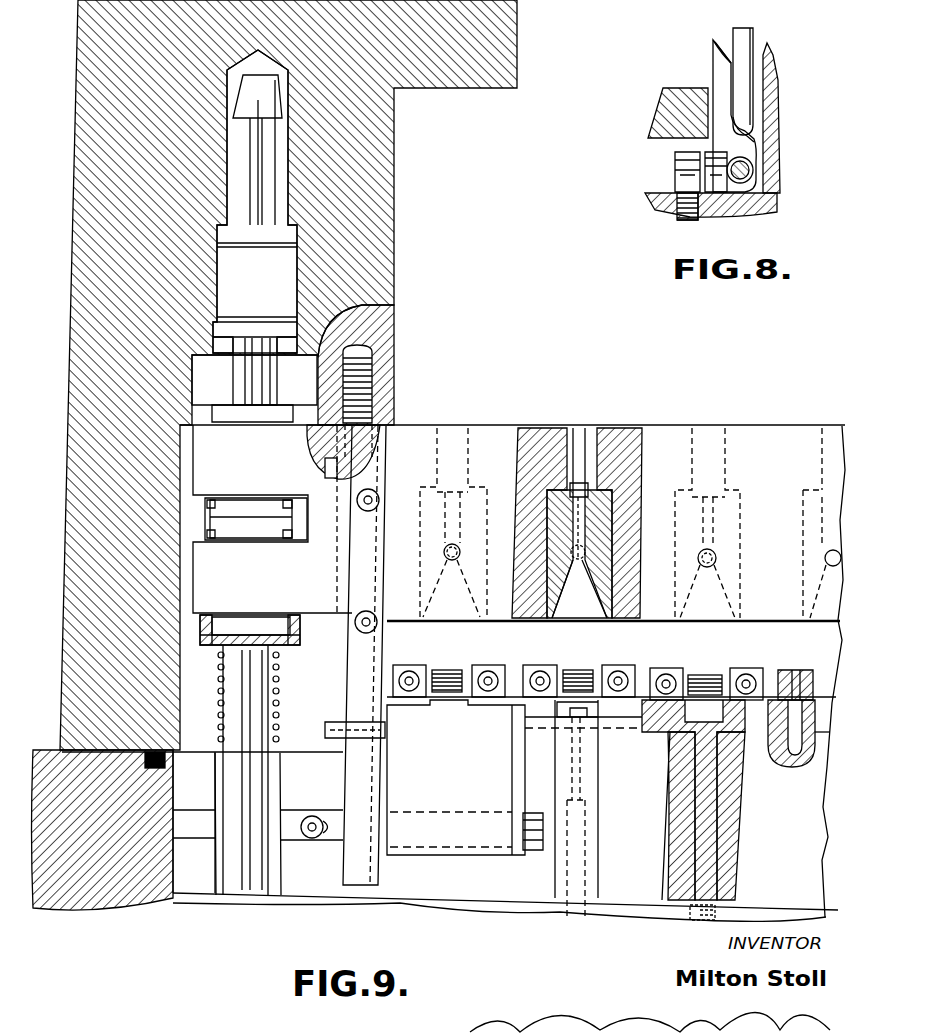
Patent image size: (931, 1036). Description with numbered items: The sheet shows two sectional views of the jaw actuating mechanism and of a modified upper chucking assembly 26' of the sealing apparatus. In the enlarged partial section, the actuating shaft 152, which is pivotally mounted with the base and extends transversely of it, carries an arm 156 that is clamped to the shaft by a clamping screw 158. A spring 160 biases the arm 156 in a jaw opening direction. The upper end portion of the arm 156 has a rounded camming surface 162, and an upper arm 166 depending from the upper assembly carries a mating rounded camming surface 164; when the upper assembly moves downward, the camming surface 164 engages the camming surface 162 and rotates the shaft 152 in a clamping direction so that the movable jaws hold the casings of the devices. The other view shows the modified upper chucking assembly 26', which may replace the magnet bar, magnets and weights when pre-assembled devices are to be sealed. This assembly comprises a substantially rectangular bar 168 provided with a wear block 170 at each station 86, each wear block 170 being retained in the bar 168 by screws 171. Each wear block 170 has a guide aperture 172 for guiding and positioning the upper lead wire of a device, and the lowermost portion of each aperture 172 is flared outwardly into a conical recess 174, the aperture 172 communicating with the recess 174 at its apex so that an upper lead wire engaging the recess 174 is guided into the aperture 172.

In FIG. 9, the upper chucking assembly 26' is at (616, 651).
In FIG. 9, the station 86 is at (452, 407).
In FIG. 9, the rectangular bar 168 is at (682, 404).
In FIG. 8, the rectangular bar 168 is at (778, 110).
In FIG. 9, the wear block 170 is at (622, 544).
In FIG. 9, the screw 171 is at (462, 546).
In FIG. 9, the guide aperture 172 is at (612, 507).
In FIG. 9, the conical recess 174 is at (612, 575).
In FIG. 8, the actuating shaft 152 is at (753, 178).
In FIG. 8, the arm 156 is at (716, 65).
In FIG. 8, the clamping screw 158 is at (700, 150).
In FIG. 8, the spring 160 is at (680, 218).
In FIG. 8, the camming surface 162 is at (727, 45).
In FIG. 8, the camming surface 164 is at (760, 144).
In FIG. 8, the upper arm 166 is at (749, 40).